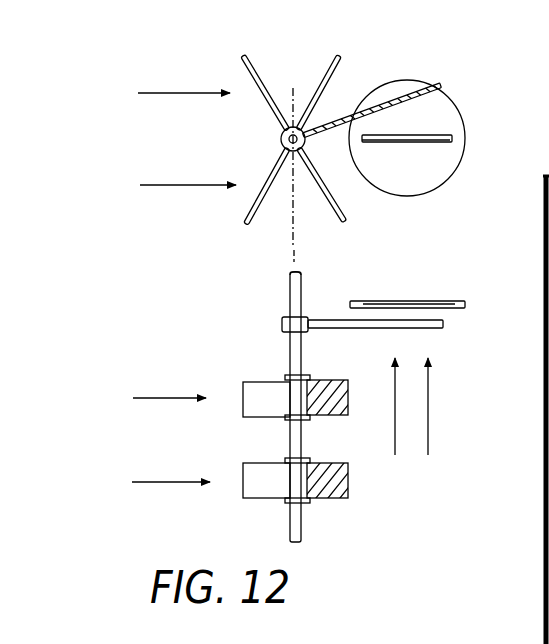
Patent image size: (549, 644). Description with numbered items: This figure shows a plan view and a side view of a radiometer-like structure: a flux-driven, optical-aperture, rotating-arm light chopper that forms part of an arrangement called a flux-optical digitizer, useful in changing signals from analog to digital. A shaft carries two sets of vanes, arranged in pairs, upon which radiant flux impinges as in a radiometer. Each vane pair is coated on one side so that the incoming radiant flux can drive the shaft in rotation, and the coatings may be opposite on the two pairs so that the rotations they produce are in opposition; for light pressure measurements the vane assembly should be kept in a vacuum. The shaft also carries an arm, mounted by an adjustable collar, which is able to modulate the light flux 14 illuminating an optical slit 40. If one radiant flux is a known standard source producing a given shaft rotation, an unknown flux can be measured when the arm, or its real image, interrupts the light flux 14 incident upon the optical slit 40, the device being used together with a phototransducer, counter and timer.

The light flux 14 is at (395, 455).
The optical slit 40 is at (452, 140).